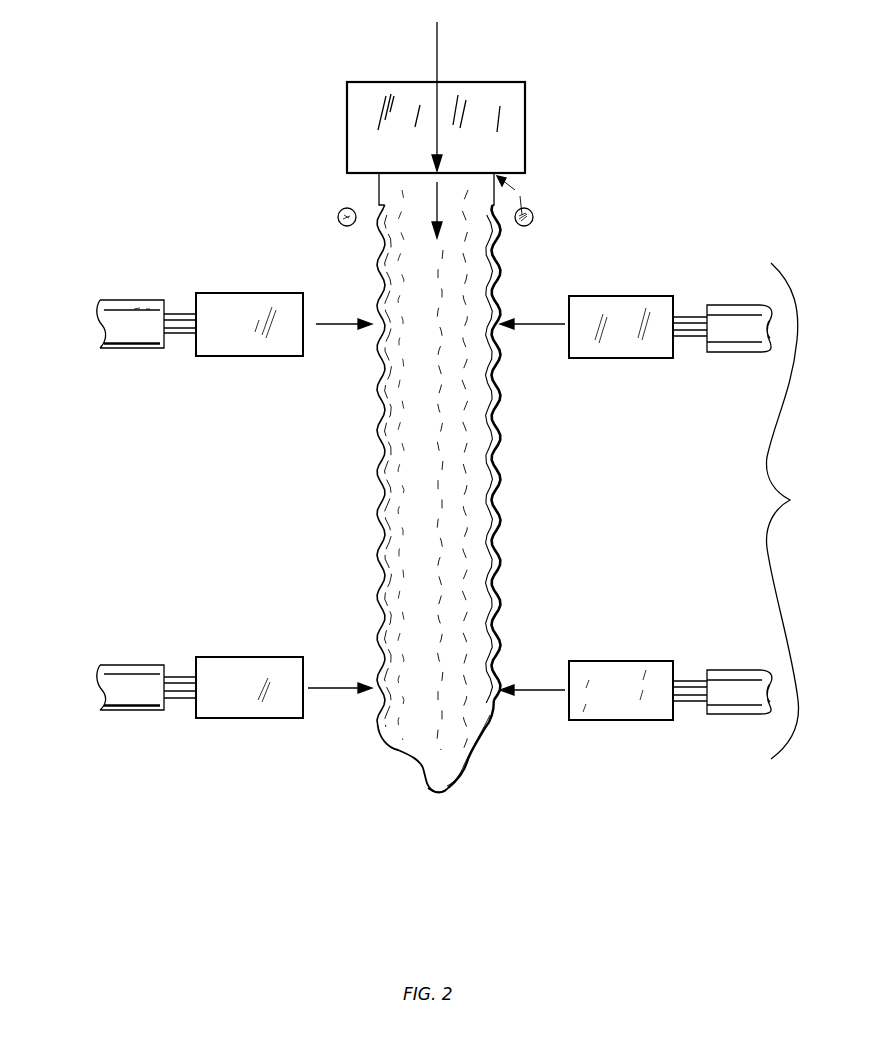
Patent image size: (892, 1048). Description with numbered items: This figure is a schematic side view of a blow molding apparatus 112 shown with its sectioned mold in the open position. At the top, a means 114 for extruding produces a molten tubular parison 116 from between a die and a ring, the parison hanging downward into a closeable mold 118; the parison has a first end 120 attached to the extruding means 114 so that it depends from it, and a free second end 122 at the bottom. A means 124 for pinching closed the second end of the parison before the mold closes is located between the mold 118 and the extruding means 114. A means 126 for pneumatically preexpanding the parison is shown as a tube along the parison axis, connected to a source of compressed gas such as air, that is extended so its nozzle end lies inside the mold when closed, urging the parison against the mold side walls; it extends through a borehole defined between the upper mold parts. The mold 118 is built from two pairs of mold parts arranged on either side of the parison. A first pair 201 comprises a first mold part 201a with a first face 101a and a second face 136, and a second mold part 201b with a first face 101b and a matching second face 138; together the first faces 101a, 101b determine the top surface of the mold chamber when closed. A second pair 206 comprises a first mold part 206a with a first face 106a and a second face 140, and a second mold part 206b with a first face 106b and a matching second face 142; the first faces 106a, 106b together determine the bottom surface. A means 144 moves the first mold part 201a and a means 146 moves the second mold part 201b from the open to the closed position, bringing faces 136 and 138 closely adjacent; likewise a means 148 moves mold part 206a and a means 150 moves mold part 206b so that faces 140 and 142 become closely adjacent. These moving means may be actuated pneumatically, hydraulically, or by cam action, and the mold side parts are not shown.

The apparatus 112 is at (614, 168).
The means for extruding 114 is at (525, 132).
The molten tubular parison 116 is at (500, 438).
The closeable mold 118 is at (796, 511).
The first end 120 is at (502, 182).
The second end 122 is at (440, 793).
The means for pinching 124 is at (332, 205).
The means for pneumatically preexpanding 126 is at (437, 57).
The second face 136 is at (302, 308).
The second face 138 is at (592, 286).
The second face 140 is at (299, 671).
The second face 142 is at (569, 676).
The means for moving 144 is at (155, 298).
The means for moving 146 is at (709, 300).
The means for moving 148 is at (155, 664).
The means for moving 150 is at (730, 718).
The first pair of mold parts 201 is at (82, 325).
The second pair of mold parts 206 is at (80, 698).
The first mold part 201a is at (242, 293).
The second mold part 201b is at (624, 296).
The first face 101a is at (228, 356).
The first face 101b is at (610, 358).
The first face 106a is at (235, 640).
The first face 106b is at (638, 661).
The first mold part 206a is at (228, 718).
The second mold part 206b is at (610, 720).